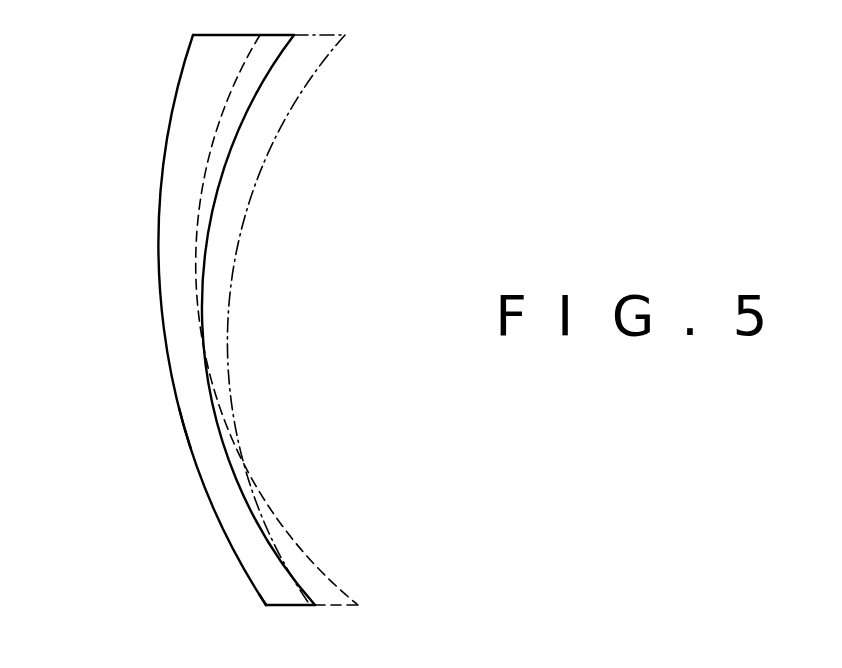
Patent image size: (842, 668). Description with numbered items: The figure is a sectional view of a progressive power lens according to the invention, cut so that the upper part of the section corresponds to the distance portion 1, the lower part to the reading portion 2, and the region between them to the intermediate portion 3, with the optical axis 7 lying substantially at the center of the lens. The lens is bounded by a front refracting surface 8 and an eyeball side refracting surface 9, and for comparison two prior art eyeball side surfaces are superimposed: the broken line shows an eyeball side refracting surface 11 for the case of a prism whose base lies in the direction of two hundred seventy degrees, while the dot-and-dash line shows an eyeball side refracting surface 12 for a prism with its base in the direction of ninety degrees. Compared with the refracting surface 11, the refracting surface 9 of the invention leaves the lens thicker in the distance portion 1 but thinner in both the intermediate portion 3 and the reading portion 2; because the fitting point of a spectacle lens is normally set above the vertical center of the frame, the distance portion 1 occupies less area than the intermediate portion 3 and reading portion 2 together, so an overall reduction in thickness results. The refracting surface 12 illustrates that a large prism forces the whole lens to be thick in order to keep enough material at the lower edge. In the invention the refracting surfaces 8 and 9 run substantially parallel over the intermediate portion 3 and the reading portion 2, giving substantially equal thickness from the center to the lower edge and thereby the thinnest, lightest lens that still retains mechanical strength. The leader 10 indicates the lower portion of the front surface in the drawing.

The distance portion 1 is at (190, 110).
The reading portion 2 is at (177, 365).
The intermediate portion 3 is at (230, 522).
The optical axis 7 is at (160, 242).
The refracting surface 8 is at (258, 592).
The refracting surface 9 is at (257, 92).
The lower portion of front surface 10 is at (182, 453).
The eyeball side refracting surface 11 is at (242, 60).
The eyeball side refracting surface 12 is at (280, 122).